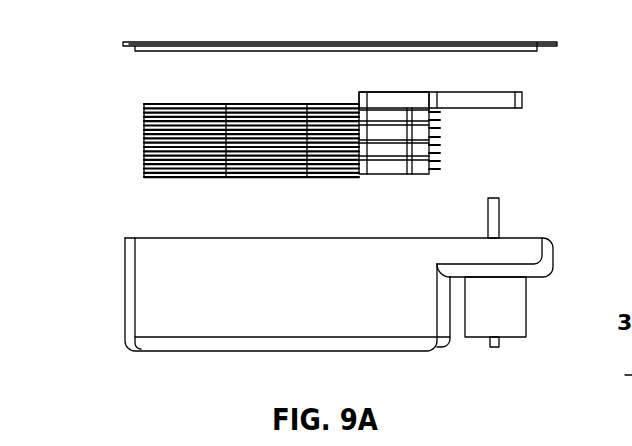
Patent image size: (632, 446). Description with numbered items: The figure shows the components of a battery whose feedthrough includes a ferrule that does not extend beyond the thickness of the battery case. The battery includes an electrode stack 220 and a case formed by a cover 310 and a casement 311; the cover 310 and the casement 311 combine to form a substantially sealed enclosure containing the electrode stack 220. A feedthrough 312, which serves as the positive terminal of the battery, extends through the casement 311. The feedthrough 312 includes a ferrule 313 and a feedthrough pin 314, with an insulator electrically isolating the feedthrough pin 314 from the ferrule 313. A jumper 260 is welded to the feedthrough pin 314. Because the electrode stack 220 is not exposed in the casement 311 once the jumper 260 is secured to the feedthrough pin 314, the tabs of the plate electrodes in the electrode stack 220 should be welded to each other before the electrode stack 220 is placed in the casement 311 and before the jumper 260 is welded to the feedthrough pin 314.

The electrode stack 220 is at (130, 118).
The cover 310 is at (330, 52).
The jumper 260 is at (503, 97).
The casement 311 is at (315, 302).
The ferrule 313 is at (517, 300).
The feedthrough pin 314 is at (495, 351).
The feedthrough 312 is at (346, 310).